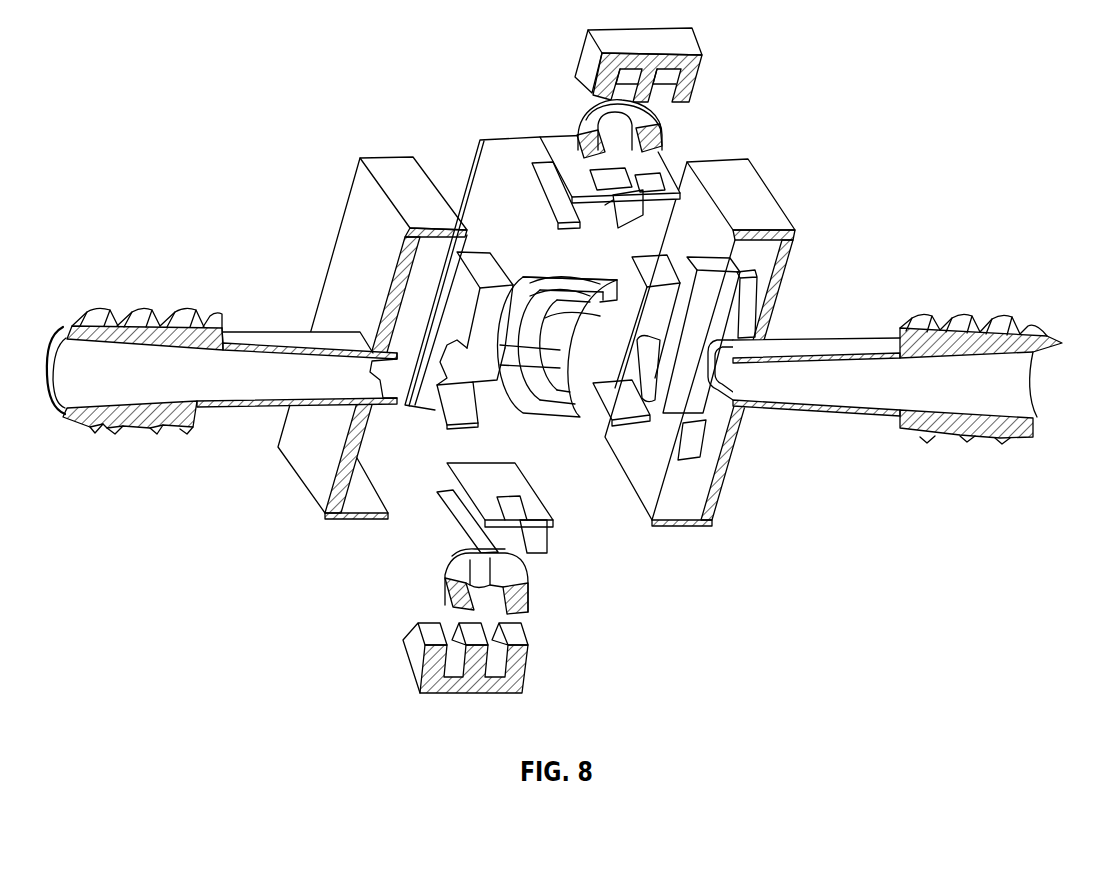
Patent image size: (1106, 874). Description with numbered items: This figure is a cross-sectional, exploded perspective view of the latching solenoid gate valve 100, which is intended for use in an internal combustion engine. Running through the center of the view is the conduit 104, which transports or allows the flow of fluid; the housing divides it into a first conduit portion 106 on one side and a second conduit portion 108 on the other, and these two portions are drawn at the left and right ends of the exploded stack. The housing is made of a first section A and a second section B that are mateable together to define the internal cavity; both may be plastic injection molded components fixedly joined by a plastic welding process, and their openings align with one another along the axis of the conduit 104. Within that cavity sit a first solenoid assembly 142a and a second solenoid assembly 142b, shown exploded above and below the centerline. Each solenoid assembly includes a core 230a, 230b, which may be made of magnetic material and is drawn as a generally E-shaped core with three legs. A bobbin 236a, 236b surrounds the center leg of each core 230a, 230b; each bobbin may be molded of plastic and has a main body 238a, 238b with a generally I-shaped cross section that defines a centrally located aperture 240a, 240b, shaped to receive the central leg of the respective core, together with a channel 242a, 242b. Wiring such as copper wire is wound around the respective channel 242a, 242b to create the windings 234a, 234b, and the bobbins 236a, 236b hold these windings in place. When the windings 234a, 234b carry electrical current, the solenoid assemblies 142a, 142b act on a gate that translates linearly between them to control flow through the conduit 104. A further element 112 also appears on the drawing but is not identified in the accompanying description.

The latching solenoid gate valve 100 is at (806, 197).
The conduit 104 is at (233, 403).
The first conduit portion 106 is at (97, 322).
The second conduit portion 108 is at (1013, 330).
The housing half 112 is at (353, 212).
The first solenoid assembly 142a is at (717, 95).
The second solenoid assembly 142b is at (593, 632).
The core 230a is at (687, 42).
The core 230b is at (522, 670).
The winding 234a is at (580, 113).
The winding 234b is at (450, 587).
The bobbin 236a is at (680, 133).
The bobbin 236b is at (613, 548).
The main body 238a is at (552, 137).
The main body 238b is at (460, 463).
The aperture 240a is at (613, 213).
The aperture 240b is at (457, 583).
The channel 242a is at (650, 187).
The channel 242b is at (480, 548).
The first section A is at (312, 483).
The second section B is at (723, 487).